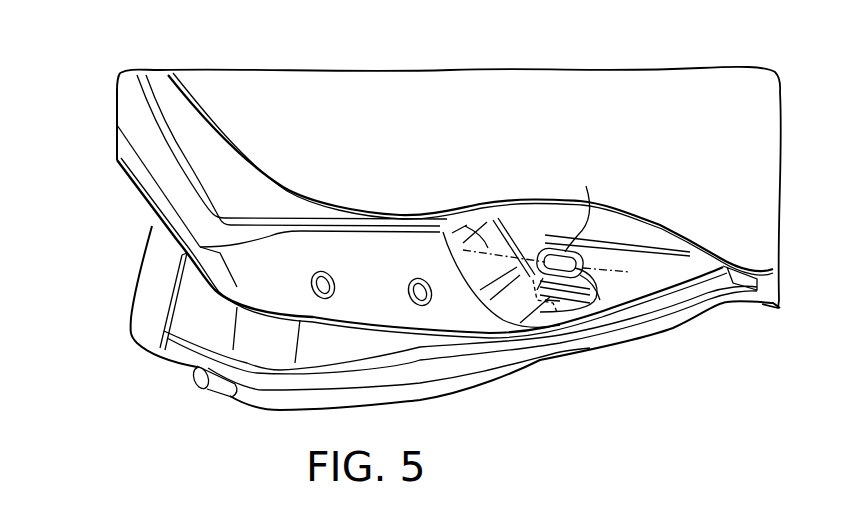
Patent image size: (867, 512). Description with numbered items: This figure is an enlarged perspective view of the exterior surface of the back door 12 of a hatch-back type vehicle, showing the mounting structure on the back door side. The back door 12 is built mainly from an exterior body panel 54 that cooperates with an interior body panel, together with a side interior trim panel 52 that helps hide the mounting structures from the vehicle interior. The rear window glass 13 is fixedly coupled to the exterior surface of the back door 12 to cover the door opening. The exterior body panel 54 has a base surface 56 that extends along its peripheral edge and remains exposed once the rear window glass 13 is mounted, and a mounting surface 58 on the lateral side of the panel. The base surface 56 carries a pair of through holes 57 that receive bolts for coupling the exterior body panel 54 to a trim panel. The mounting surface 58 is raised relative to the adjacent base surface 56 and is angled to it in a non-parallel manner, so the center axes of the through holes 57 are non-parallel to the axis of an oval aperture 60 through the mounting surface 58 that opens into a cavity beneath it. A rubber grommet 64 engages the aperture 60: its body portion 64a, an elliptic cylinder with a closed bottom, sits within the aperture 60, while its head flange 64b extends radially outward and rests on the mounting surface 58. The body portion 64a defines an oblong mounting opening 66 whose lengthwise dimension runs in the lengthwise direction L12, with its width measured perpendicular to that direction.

The back door 12 is at (145, 223).
The rear window glass 13 is at (426, 106).
The side interior trim panels 52 is at (144, 333).
The exterior body panel 54 is at (650, 277).
The base surface 56 is at (277, 263).
The through holes 57 is at (418, 279).
The mounting surface 58 is at (530, 243).
The aperture 60 is at (552, 250).
The grommet 64 is at (563, 280).
The body portion 64a is at (556, 312).
The head flange 64b is at (600, 300).
The mounting opening 66 is at (579, 206).
The lengthwise direction L12 is at (482, 240).